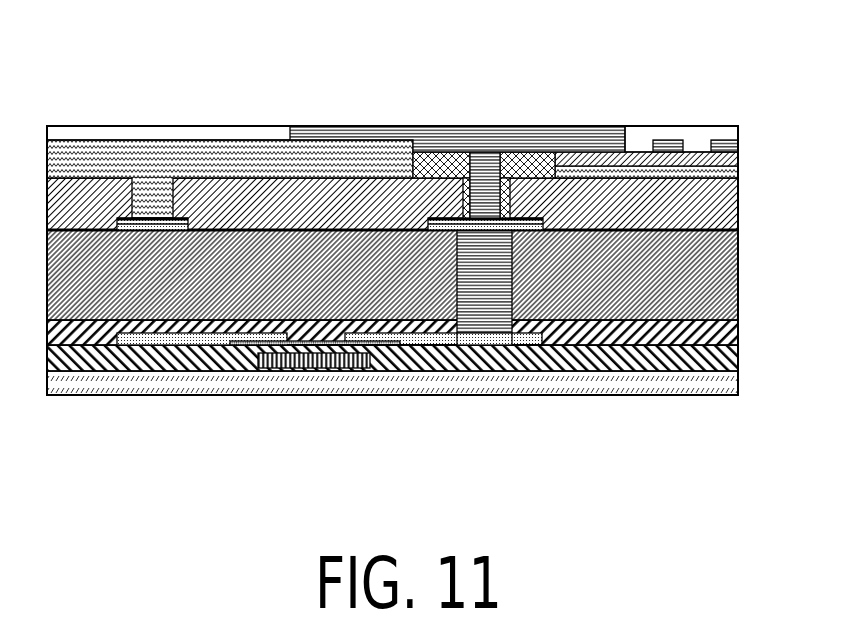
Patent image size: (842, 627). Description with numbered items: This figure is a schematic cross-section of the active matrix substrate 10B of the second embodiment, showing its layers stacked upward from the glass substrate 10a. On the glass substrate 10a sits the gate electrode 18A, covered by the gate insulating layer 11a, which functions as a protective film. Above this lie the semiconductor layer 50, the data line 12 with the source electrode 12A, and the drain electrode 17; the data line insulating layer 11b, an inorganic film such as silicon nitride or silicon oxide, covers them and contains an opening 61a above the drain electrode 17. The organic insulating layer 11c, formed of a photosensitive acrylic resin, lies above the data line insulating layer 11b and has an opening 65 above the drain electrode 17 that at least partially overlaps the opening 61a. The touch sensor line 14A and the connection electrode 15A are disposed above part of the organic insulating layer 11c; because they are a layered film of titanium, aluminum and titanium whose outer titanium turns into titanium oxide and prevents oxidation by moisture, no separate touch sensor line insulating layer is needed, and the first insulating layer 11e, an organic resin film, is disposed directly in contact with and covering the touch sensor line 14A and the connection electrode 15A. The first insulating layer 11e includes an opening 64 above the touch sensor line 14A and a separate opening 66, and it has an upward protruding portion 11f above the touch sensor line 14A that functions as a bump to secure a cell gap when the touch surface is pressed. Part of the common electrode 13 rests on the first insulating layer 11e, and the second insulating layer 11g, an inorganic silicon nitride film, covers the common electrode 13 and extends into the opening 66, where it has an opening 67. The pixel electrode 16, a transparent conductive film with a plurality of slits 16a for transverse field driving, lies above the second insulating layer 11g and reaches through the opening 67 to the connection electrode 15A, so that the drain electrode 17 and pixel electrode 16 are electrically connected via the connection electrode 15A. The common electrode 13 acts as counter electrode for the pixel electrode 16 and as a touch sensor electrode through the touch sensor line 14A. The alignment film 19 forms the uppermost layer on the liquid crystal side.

The active matrix substrate 10B is at (318, 126).
The glass substrate 10a is at (718, 384).
The gate insulating layer 11a is at (718, 362).
The data line insulating layer 11b is at (718, 333).
The organic insulating layer 11c is at (718, 301).
The first insulating layer 11e is at (718, 215).
The protruding portion 11f is at (143, 153).
The second insulating layer 11g is at (718, 163).
The data line 12 is at (175, 346).
The source electrode 12A is at (227, 346).
The common electrode 13 is at (107, 168).
The touch sensor line 14A is at (128, 232).
The connection electrode 15A is at (465, 326).
The pixel electrode 16 is at (402, 138).
The slits 16a is at (708, 142).
The drain electrode 17 is at (433, 344).
The gate electrode 18A is at (305, 369).
The alignment film 19 is at (723, 130).
The semiconductor layer 50 is at (382, 350).
The opening 61a is at (510, 277).
The opening 64 is at (166, 188).
The opening 65 is at (492, 334).
The opening 66 is at (502, 197).
The opening 67 is at (490, 163).